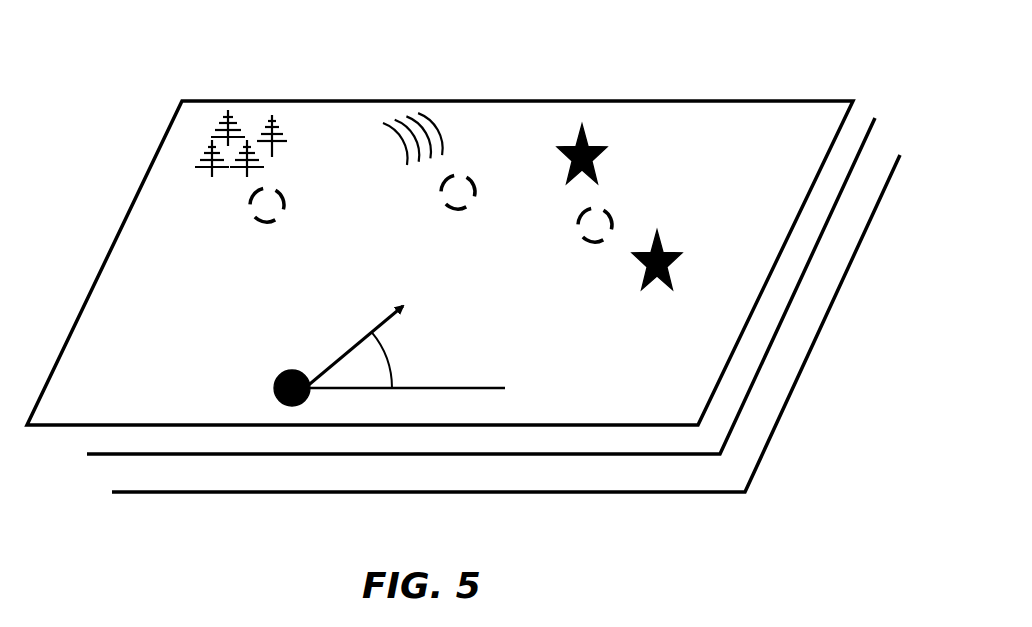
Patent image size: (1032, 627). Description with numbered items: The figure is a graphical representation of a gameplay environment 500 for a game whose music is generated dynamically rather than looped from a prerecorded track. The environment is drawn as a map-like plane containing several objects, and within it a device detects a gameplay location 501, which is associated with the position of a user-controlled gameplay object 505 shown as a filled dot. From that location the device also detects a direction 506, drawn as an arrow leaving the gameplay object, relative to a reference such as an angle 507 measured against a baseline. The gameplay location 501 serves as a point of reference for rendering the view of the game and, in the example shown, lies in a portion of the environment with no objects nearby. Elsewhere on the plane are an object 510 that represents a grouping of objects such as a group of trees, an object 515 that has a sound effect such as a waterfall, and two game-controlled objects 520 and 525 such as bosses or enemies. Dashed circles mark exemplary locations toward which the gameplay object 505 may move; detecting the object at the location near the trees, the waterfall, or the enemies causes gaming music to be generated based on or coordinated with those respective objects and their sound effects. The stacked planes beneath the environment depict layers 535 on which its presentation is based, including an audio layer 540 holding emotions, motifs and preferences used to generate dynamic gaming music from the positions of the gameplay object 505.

The gameplay environment 500 is at (138, 77).
The gameplay location 501 is at (280, 348).
The gameplay object 505 is at (273, 388).
The direction 506 is at (354, 346).
The angle 507 is at (405, 360).
The object 510 is at (262, 113).
The object 515 is at (464, 120).
The object 520 is at (592, 146).
The object 525 is at (680, 262).
The layers 535 is at (871, 113).
The audio layer 540 is at (690, 455).